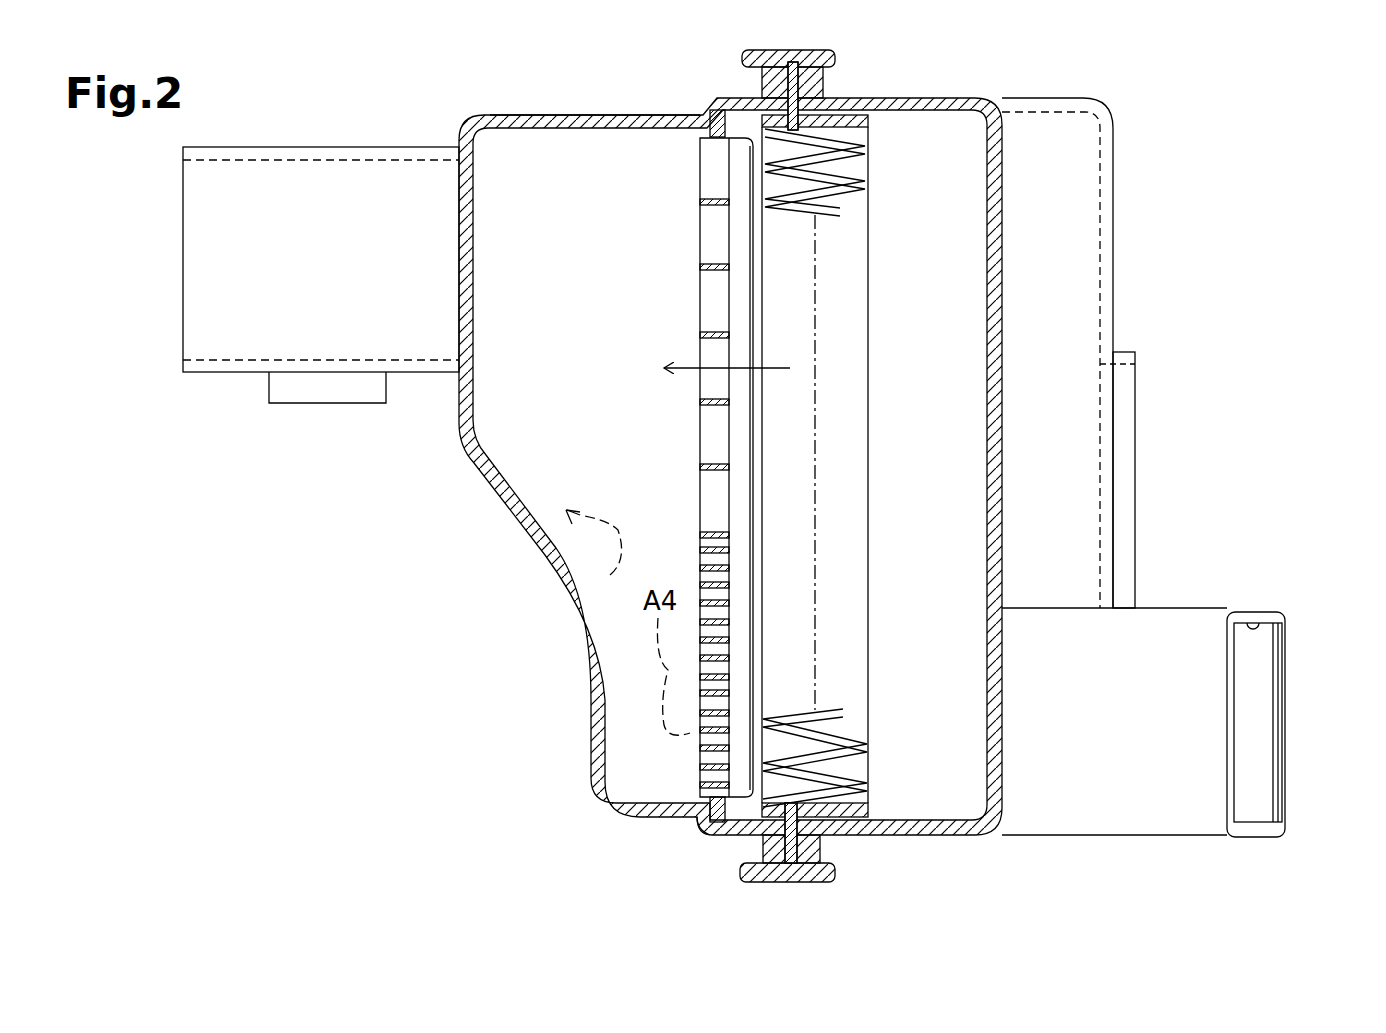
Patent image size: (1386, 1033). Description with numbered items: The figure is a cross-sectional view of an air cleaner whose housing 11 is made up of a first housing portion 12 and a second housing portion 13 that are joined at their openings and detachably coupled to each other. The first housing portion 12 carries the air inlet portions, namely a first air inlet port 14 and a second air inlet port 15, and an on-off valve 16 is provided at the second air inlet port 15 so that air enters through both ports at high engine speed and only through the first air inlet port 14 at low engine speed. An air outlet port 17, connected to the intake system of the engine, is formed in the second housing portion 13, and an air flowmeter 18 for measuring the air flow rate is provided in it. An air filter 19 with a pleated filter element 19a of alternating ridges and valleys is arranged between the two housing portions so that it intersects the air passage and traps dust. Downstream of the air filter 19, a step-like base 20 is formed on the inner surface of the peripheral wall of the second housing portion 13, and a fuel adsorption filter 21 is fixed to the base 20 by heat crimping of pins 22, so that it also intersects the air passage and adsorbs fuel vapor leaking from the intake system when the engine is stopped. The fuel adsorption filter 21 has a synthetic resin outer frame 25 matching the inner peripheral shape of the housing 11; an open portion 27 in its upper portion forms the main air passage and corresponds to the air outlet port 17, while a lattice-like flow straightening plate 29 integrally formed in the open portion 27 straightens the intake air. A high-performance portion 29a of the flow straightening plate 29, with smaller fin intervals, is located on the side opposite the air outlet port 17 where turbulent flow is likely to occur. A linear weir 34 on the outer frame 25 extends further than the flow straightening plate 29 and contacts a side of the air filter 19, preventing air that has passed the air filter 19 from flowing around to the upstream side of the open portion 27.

The housing 11 is at (535, 118).
The first housing portion 12 is at (938, 98).
The second housing portion 13 is at (610, 120).
The first air inlet port 14 is at (1125, 366).
The second air inlet port 15 is at (1254, 622).
The on-off valve 16 is at (1270, 664).
The air outlet port 17 is at (312, 162).
The air flowmeter 18 is at (326, 403).
The air filter 19 is at (850, 435).
The pleated filter element 19a is at (858, 192).
The step-like base 20 is at (712, 108).
The fuel adsorption filter 21 is at (709, 467).
The pins 22 is at (714, 824).
The outer frame 25 is at (700, 130).
The open portion 27 is at (700, 336).
The flow straightening plate 29 is at (700, 466).
The high-performance portion 29a is at (700, 547).
The weir 34 is at (748, 450).